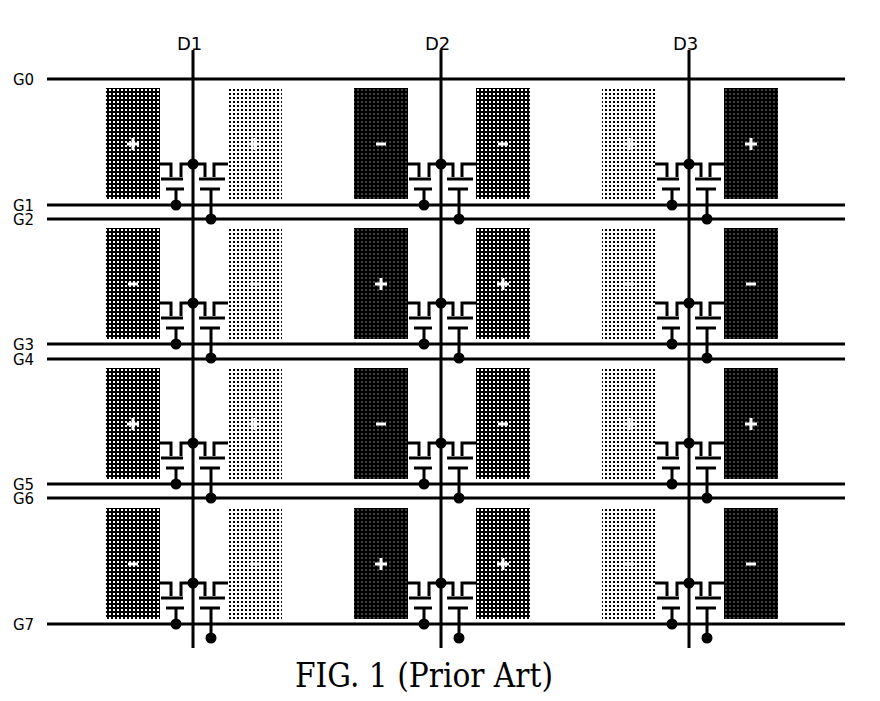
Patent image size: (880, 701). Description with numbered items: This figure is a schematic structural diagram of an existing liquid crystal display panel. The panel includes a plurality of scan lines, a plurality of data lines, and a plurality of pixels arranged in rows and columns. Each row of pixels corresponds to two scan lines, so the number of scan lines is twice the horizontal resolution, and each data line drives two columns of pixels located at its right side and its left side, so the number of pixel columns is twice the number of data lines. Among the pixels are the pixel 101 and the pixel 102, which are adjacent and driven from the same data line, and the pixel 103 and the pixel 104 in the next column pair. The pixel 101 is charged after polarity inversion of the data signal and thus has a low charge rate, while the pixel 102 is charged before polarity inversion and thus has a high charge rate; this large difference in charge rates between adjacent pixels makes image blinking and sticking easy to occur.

The pixel 101 is at (110, 88).
The pixel 102 is at (270, 107).
The pixel 103 is at (388, 107).
The pixel 104 is at (507, 88).